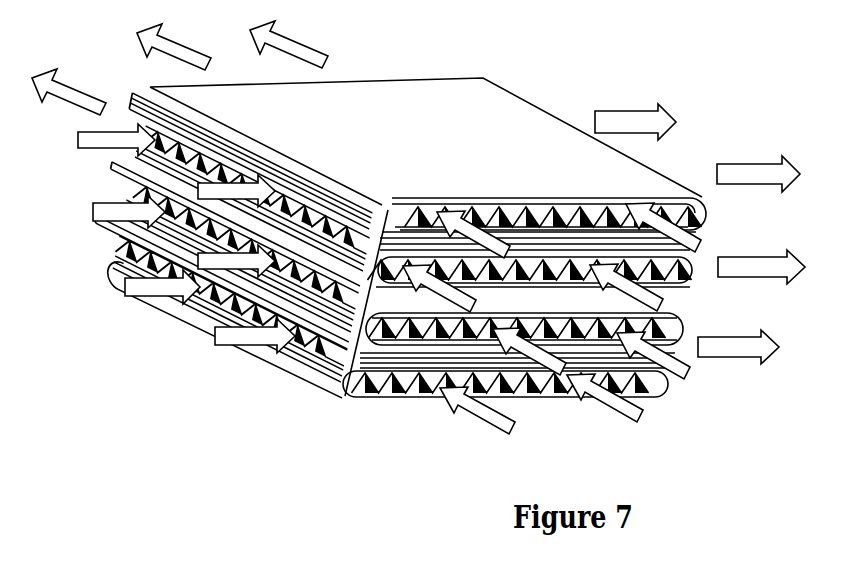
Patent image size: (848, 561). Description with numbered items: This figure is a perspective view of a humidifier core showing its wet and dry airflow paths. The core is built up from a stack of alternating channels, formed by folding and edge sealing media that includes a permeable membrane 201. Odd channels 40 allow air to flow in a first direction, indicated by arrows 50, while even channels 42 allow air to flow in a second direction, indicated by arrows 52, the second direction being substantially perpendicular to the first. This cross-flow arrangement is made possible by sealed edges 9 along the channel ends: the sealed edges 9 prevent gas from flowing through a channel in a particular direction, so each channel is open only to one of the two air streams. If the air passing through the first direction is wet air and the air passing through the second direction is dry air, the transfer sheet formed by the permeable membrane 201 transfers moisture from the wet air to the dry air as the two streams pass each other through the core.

The sealed edges 9 is at (400, 270).
The odd channels 40 is at (421, 394).
The even channels 42 is at (315, 345).
The arrows 50 is at (613, 407).
The arrows 52 is at (239, 340).
The permeable membrane 201 is at (397, 403).